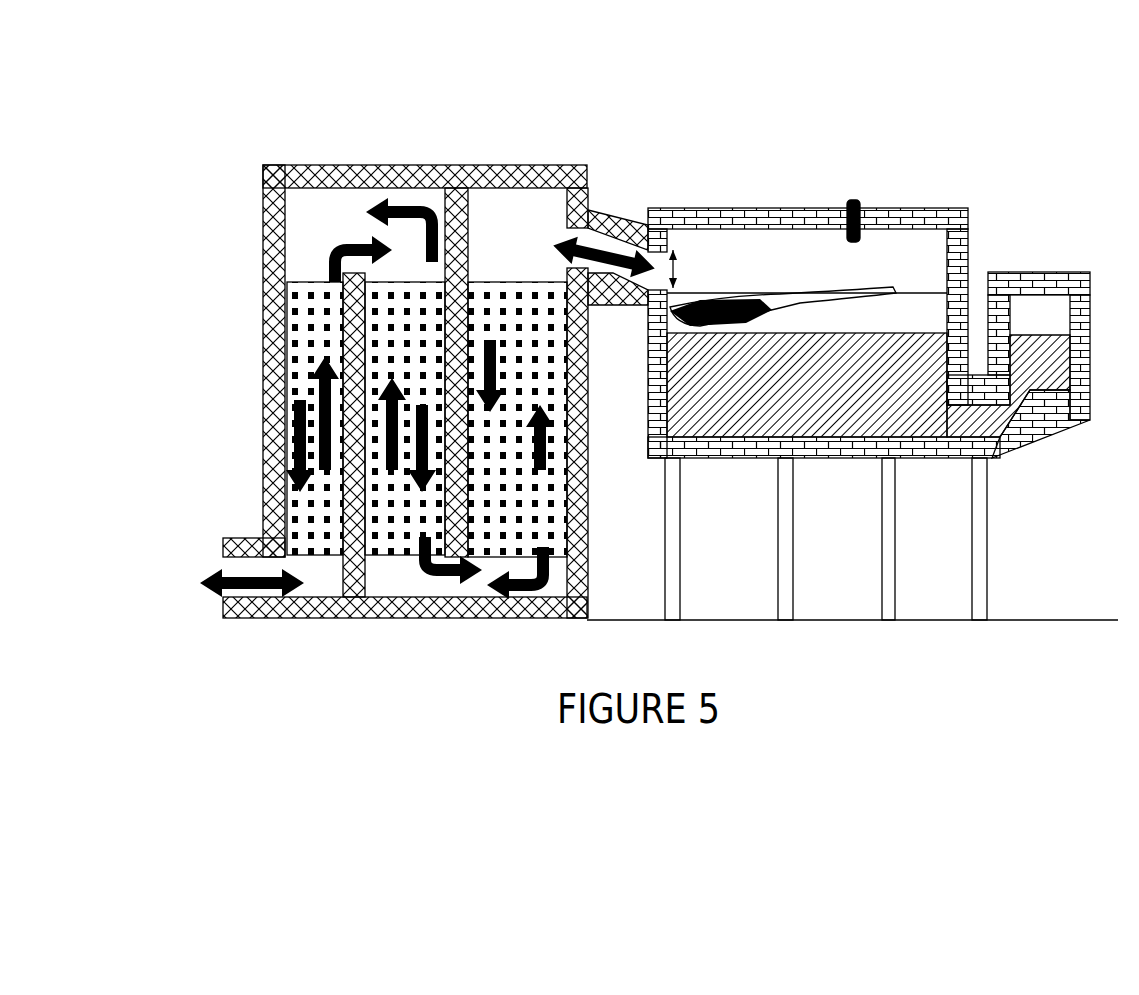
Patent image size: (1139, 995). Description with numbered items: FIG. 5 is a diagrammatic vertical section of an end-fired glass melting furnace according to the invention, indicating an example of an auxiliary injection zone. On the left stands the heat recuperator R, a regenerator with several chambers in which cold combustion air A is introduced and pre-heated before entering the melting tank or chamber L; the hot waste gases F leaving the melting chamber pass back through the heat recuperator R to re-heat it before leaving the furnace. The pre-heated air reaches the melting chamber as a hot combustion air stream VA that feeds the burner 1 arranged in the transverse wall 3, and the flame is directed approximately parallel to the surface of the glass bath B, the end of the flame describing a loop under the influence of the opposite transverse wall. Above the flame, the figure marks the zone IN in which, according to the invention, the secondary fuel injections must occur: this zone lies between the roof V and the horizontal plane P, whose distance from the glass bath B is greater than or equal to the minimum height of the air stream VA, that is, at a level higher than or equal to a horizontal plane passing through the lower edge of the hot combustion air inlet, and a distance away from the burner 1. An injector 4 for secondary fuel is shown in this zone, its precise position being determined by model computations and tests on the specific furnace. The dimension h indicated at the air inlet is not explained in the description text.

The heat recuperator R is at (305, 230).
The waste gases F is at (295, 442).
The cold combustion air A is at (545, 452).
The air stream VA is at (614, 212).
The roof V is at (823, 207).
The melting tank L is at (747, 188).
The burner 1 is at (645, 317).
The transverse wall 3 is at (650, 392).
The horizontal plane P is at (922, 290).
The glass bath B is at (790, 393).
The injection zone IN is at (893, 245).
The injector 4 is at (860, 195).
The burner port height h is at (685, 269).